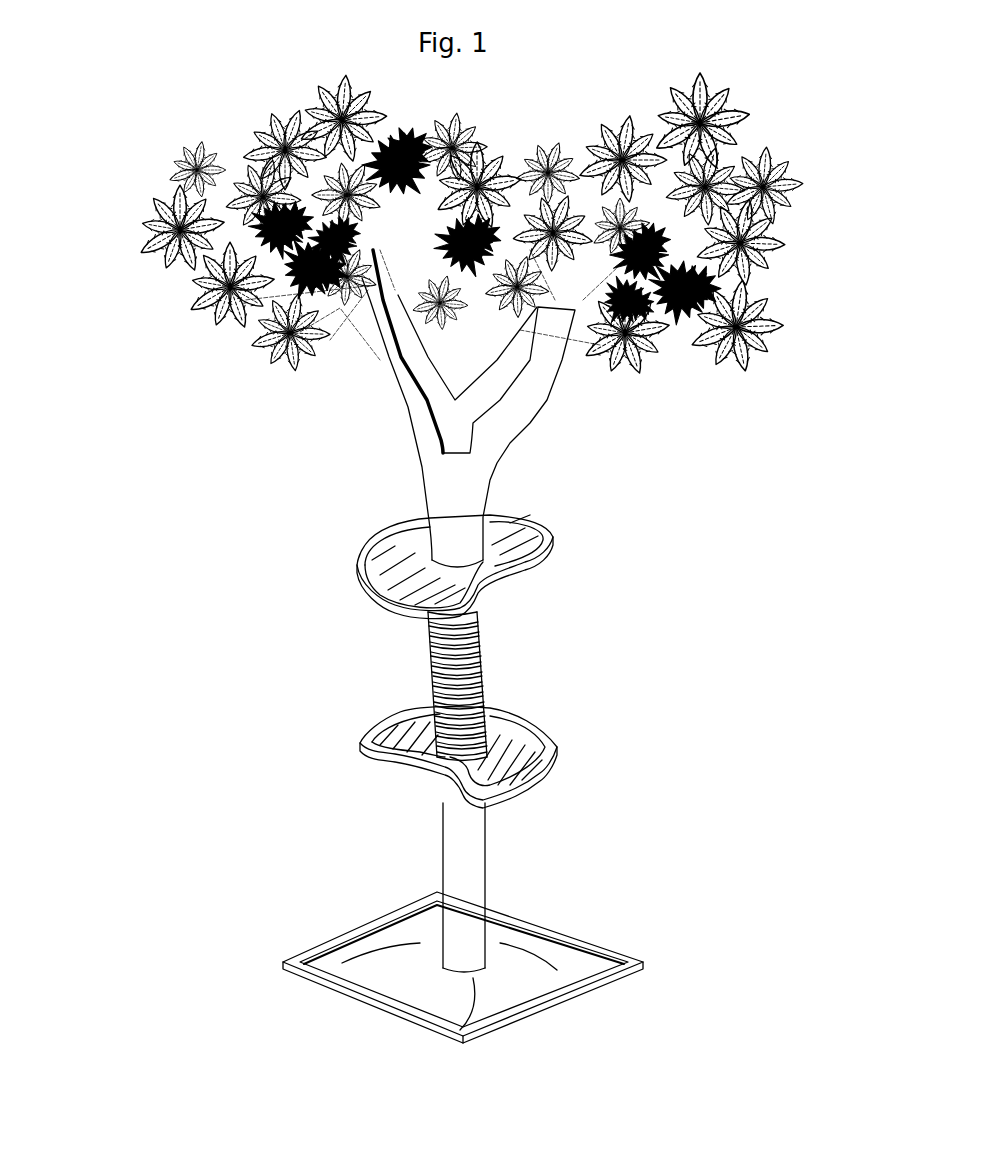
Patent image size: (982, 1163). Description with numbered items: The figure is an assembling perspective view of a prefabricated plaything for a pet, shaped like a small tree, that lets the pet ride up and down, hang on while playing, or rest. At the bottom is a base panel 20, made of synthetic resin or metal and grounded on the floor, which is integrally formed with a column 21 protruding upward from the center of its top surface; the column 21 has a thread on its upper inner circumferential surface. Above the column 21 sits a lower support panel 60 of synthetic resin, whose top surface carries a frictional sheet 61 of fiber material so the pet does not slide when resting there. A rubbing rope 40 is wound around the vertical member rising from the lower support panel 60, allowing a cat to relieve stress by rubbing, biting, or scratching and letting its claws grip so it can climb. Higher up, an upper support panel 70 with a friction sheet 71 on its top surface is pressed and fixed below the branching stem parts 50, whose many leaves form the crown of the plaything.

The base panel 20 is at (380, 1017).
The column 21 is at (477, 863).
The rubbing rope 40 is at (473, 648).
The stem parts 50 is at (147, 170).
The lower support panel 60 is at (553, 753).
The frictional sheet 61 is at (505, 740).
The upper support panel 70 is at (550, 535).
The friction sheet 71 is at (495, 547).